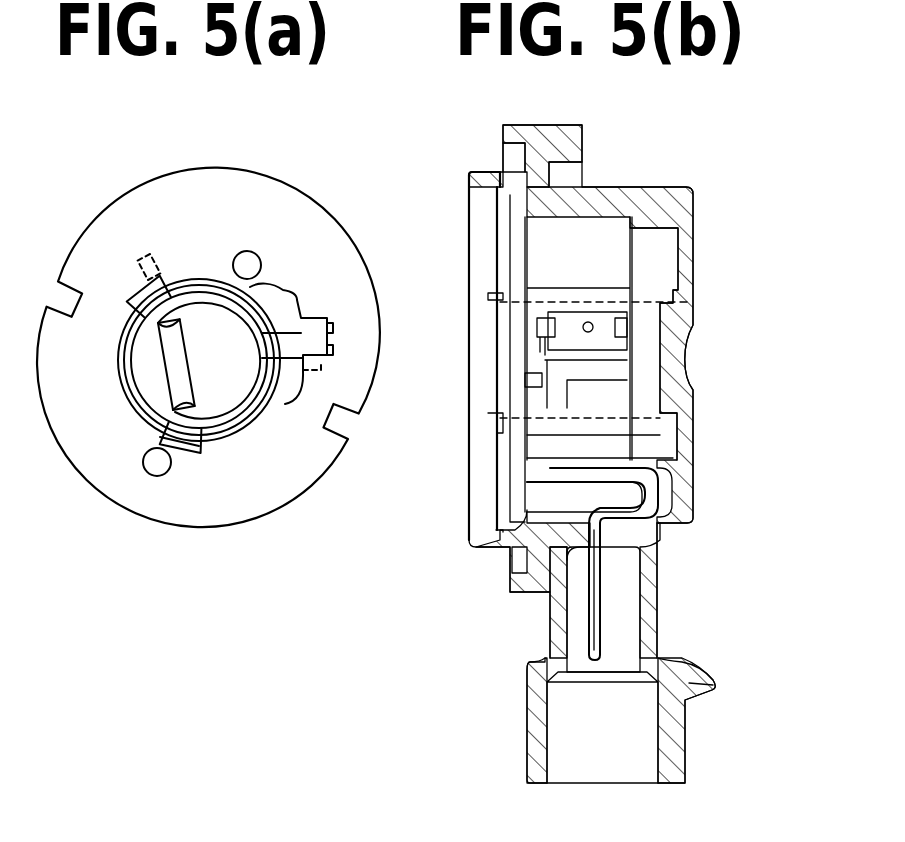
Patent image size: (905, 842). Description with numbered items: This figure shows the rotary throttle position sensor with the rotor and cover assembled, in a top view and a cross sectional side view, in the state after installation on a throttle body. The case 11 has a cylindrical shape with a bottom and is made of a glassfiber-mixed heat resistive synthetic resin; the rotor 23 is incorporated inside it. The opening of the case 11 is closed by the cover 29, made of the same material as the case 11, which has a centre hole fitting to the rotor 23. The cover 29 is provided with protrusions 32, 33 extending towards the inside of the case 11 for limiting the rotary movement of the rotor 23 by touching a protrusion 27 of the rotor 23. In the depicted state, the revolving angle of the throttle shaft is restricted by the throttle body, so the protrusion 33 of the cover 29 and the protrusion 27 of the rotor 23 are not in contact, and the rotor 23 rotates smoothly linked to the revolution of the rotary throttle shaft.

In FIG. 5B, the case 11 is at (673, 500).
In FIG. 5B, the rotor 23 is at (645, 342).
In FIG. 5B, the protrusion 27 is at (543, 323).
In FIG. 5A, the cover 29 is at (217, 218).
In FIG. 5A, the protrusion 32 is at (140, 262).
In FIG. 5B, the protrusion 33 is at (528, 380).